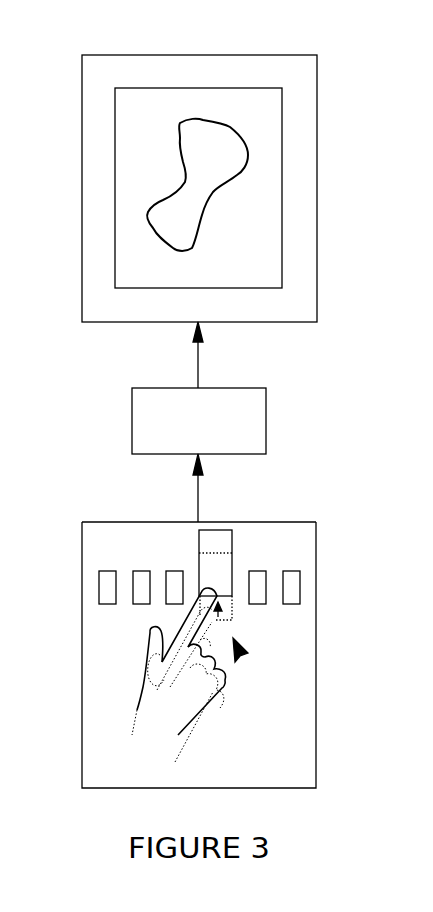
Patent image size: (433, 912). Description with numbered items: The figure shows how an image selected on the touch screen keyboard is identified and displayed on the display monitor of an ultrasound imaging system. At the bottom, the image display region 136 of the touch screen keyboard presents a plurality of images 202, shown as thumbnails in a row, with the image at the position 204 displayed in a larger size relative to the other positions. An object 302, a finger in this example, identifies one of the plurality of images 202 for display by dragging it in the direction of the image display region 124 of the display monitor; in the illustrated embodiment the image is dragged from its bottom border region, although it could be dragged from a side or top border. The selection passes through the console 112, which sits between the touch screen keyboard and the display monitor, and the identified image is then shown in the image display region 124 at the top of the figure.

The image display region of the display monitor 124 is at (198, 55).
The console 112 is at (132, 420).
The image display region of the touch screen keyboard 136 is at (170, 522).
The plurality of images 202 is at (230, 641).
The position 204 is at (242, 657).
The object 302 is at (138, 698).